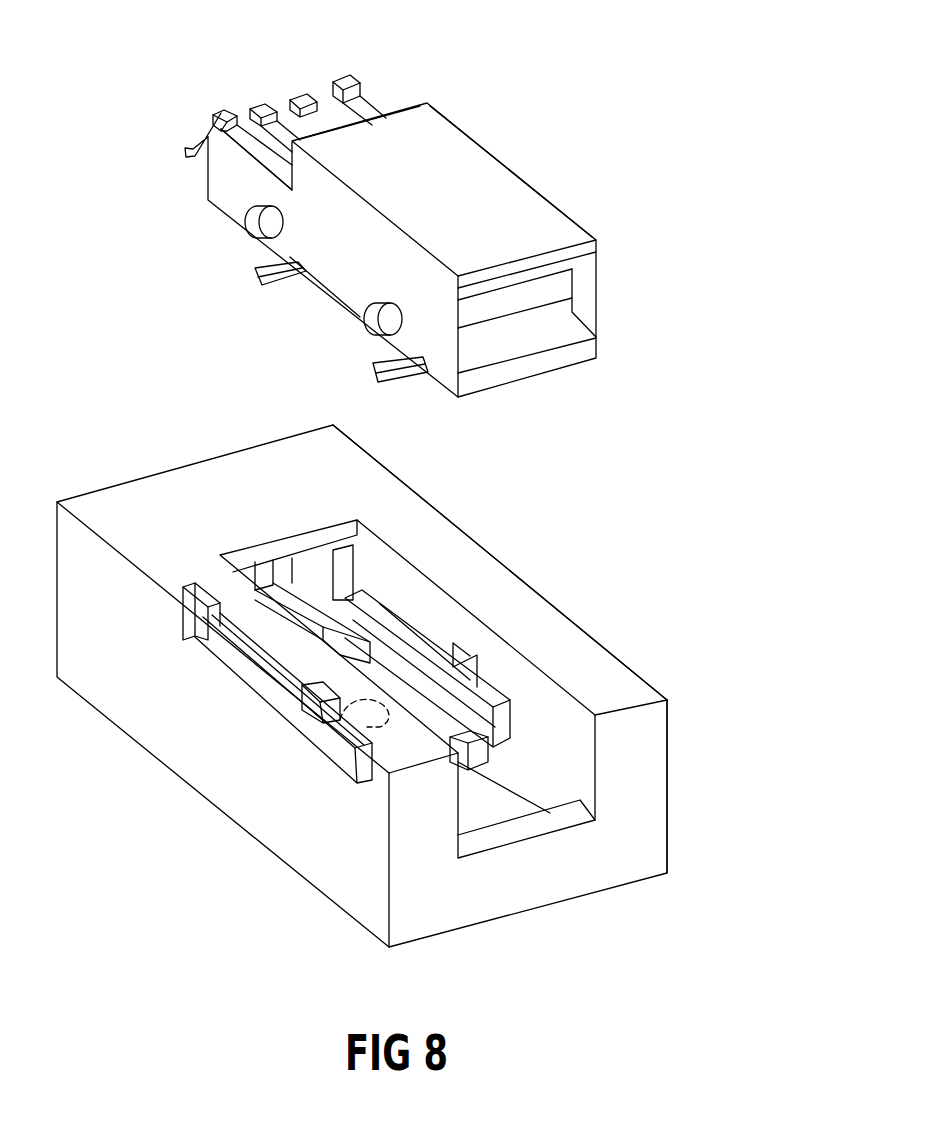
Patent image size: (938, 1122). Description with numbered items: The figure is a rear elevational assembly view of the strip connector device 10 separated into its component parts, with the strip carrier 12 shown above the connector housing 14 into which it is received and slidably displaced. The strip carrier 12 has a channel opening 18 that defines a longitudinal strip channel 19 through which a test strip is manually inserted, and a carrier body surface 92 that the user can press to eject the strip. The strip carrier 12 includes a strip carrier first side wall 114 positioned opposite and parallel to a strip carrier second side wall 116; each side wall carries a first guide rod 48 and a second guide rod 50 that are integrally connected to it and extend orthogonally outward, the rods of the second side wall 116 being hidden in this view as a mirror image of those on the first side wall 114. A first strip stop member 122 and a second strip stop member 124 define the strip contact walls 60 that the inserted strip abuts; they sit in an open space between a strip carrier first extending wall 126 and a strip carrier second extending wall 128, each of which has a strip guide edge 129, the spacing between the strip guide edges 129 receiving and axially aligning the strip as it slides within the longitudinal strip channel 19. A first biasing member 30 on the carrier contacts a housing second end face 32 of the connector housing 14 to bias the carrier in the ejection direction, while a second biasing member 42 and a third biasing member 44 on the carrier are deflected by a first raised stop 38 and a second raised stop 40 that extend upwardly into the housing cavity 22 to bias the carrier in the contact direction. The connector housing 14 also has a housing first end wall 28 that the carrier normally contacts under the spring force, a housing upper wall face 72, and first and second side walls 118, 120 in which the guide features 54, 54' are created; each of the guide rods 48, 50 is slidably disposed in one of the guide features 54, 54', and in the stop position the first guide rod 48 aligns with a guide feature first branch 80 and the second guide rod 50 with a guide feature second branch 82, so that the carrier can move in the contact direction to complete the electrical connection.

The strip connector device 10 is at (714, 375).
The strip carrier 12 is at (580, 169).
The connector housing 14 is at (214, 817).
The channel opening 18 is at (568, 257).
The longitudinal strip channel 19 is at (543, 292).
The housing cavity 22 is at (302, 698).
The housing first end wall 28 is at (650, 800).
The first biasing member 30 is at (187, 150).
The housing second end face 32 is at (259, 568).
The first raised stop 38 is at (387, 608).
The second raised stop 40 is at (480, 730).
The second biasing member 42 is at (257, 270).
The third biasing member 44 is at (378, 370).
The first guide rod 48 is at (252, 222).
The second guide rod 50 is at (370, 320).
The longitudinal guide feature 54 is at (237, 747).
The guide feature 54' is at (471, 616).
The strip contact wall 60 is at (292, 130).
The housing upper wall face 72 is at (282, 628).
The guide feature first branch 80 is at (348, 568).
The guide feature second branch 82 is at (465, 655).
The carrier body surface 92 is at (452, 128).
The strip carrier first side wall 114 is at (326, 294).
The strip carrier second side wall 116 is at (503, 157).
The first side wall 118 is at (285, 651).
The second side wall 120 is at (387, 513).
The first strip stop member 122 is at (258, 108).
The second strip stop member 124 is at (297, 96).
The strip carrier first extending wall 126 is at (214, 116).
The strip carrier second extending wall 128 is at (346, 73).
The strip guide edge 129 is at (368, 100).